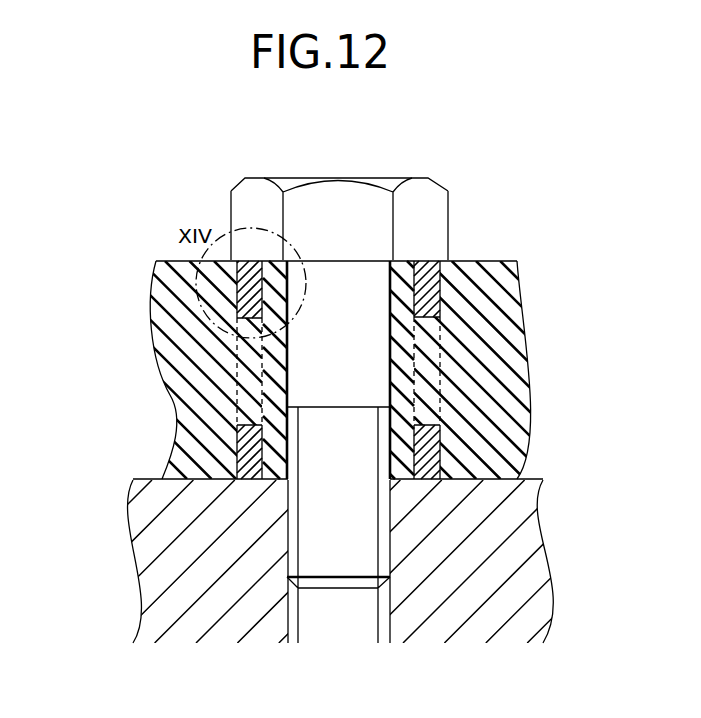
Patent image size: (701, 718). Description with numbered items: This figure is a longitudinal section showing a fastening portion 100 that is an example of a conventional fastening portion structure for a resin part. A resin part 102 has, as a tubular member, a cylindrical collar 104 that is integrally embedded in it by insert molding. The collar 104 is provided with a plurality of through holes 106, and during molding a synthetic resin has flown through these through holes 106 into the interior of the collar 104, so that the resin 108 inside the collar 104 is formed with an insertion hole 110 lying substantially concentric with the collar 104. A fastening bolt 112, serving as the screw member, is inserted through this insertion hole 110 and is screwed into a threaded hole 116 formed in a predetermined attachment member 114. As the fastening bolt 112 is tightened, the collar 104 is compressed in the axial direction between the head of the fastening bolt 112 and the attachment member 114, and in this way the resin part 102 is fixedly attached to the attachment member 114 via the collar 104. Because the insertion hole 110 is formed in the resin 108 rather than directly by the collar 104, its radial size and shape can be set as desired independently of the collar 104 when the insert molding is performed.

The fastening portion 100 is at (474, 226).
The resin part 102 is at (166, 297).
The collar 104 is at (427, 288).
The through holes 106 is at (248, 316).
The resin 108 is at (240, 441).
The insertion hole 110 is at (396, 370).
The fastening bolt 112 is at (335, 213).
The attachment member 114 is at (167, 558).
The threaded hole 116 is at (378, 613).